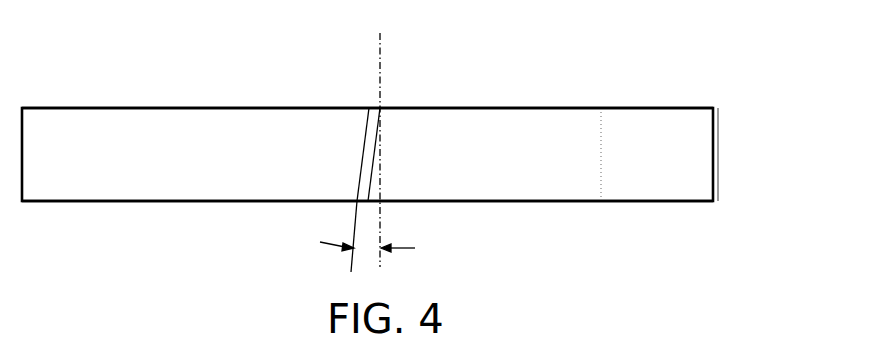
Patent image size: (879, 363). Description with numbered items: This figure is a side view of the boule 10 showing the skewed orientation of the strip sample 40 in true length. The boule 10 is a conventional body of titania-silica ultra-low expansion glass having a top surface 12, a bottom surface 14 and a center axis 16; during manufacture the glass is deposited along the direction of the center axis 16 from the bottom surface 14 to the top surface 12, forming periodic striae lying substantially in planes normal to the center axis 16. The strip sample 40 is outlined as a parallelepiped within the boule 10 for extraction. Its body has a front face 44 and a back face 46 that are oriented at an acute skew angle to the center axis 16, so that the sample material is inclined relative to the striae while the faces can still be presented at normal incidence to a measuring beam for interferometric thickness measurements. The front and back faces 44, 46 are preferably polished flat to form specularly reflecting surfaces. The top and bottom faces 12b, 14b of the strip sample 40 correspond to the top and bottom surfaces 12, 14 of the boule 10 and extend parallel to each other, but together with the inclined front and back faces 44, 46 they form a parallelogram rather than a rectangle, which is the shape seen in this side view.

The boule 10 is at (189, 107).
The top surface 12 is at (553, 108).
The top face 12b is at (377, 108).
The bottom surface 14 is at (191, 202).
The bottom face 14b is at (357, 203).
The center axis 16 is at (380, 58).
The strip sample 40 is at (375, 142).
The front face 44 is at (365, 141).
The back face 46 is at (371, 160).